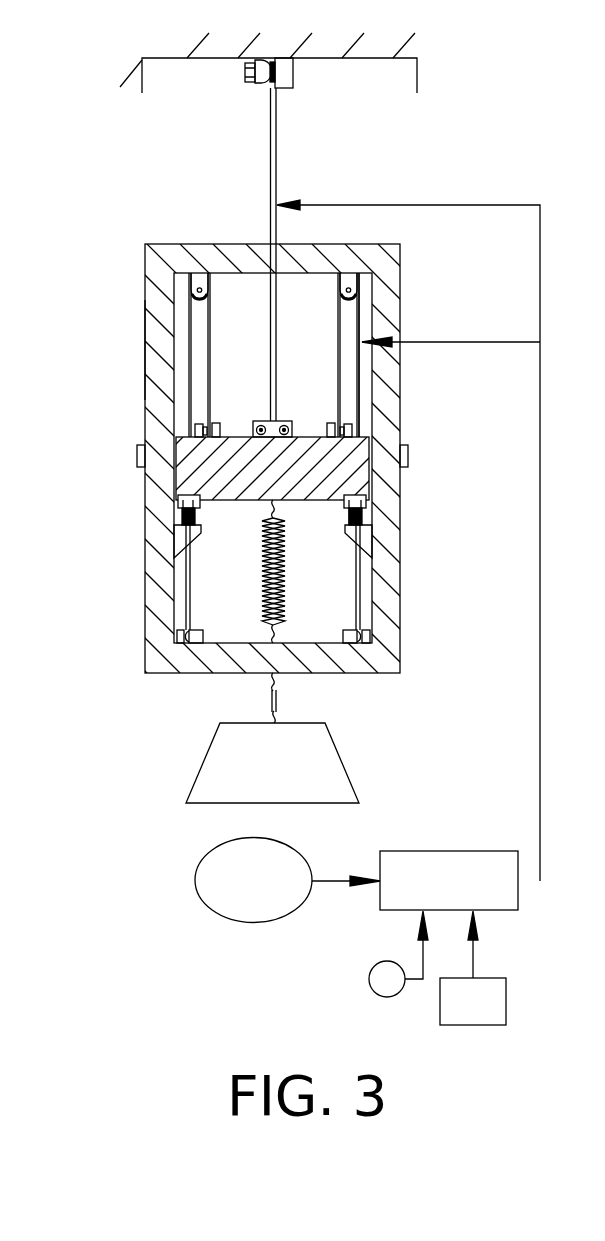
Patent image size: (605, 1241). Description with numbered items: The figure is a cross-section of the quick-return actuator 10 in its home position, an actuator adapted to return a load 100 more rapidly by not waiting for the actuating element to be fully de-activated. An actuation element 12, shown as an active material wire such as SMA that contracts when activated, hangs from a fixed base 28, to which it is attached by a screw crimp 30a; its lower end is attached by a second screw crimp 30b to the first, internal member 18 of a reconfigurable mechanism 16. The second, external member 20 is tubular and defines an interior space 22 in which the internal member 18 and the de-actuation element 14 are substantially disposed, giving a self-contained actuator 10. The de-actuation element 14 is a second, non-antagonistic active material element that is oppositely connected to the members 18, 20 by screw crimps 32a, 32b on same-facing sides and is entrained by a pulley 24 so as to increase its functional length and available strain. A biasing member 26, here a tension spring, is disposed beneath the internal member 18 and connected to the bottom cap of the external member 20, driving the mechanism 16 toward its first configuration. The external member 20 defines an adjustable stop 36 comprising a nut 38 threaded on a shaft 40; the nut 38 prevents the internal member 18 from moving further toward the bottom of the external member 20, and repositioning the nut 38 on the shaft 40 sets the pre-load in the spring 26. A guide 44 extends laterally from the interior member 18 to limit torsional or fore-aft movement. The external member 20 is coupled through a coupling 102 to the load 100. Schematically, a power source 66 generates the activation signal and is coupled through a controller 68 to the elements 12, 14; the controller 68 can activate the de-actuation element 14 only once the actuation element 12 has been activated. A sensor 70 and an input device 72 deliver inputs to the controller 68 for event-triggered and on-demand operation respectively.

The quick-return actuator 10 is at (467, 84).
The actuation element 12 is at (270, 176).
The de-actuation element 14 is at (358, 360).
The reconfigurable mechanism 16 is at (158, 405).
The first member 18 is at (370, 476).
The second member 20 is at (143, 348).
The interior space 22 is at (222, 567).
The pulley 24 is at (358, 284).
The biasing member 26 is at (285, 582).
The base 28 is at (380, 58).
The screw crimp 30a is at (244, 72).
The screw crimp 30b is at (285, 421).
The screw crimp 32a is at (348, 428).
The screw crimp 32b is at (372, 635).
The adjustable stop 36 is at (173, 493).
The nut 38 is at (175, 508).
The shaft 40 is at (173, 527).
The guide 44 is at (140, 455).
The power source 66 is at (271, 896).
The controller 68 is at (466, 896).
The sensor 70 is at (370, 972).
The input device 72 is at (490, 1015).
The load 100 is at (203, 763).
The coupling 102 is at (272, 695).